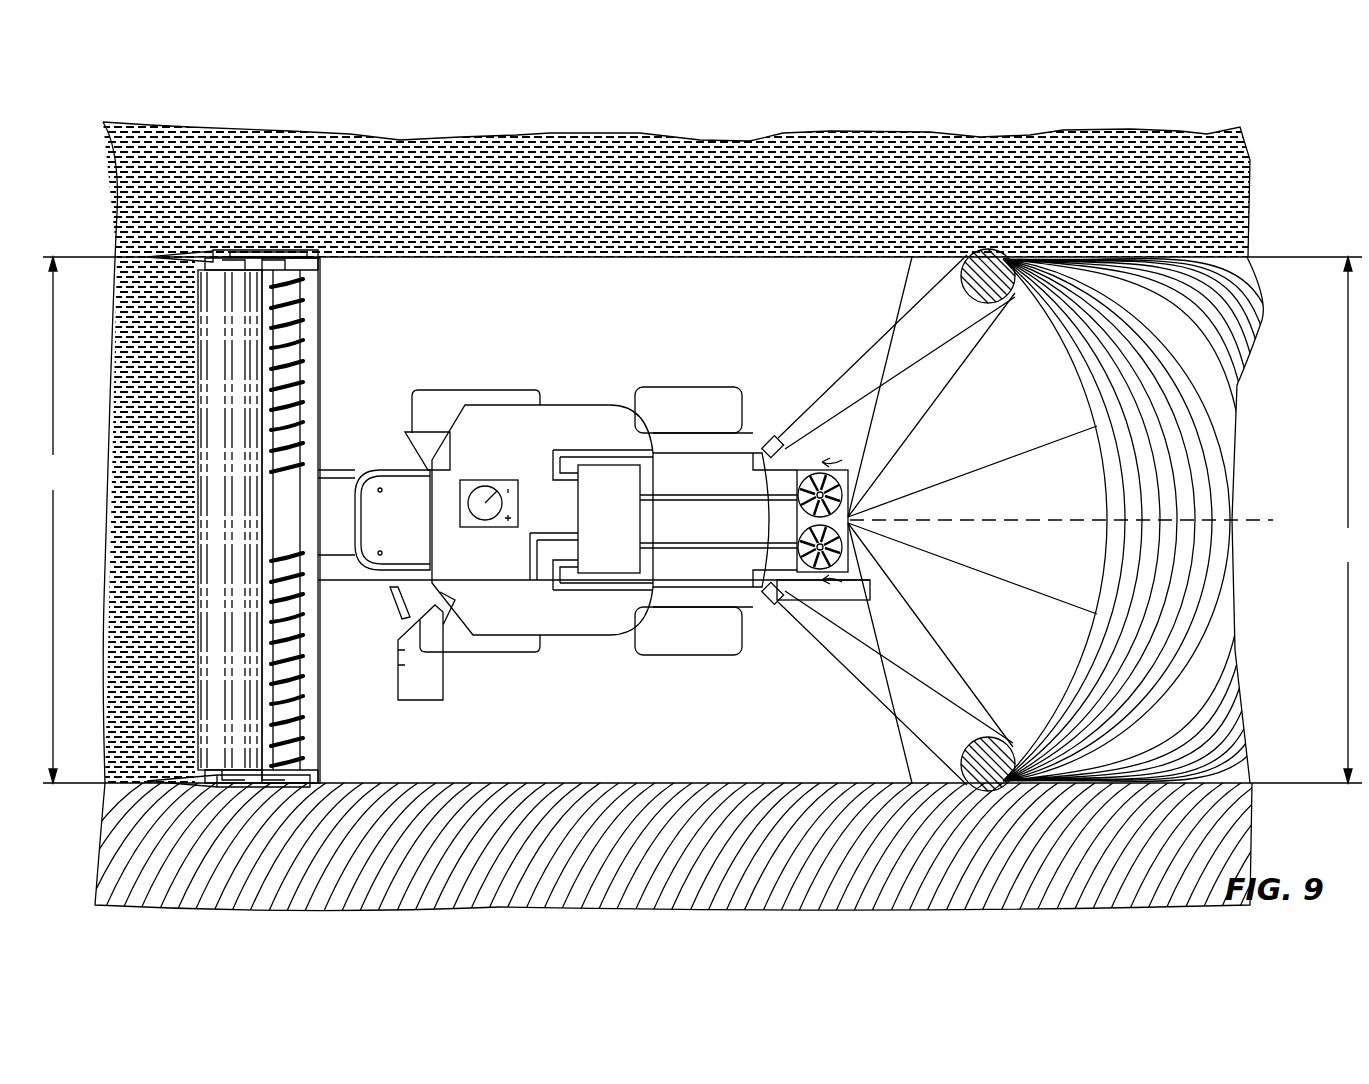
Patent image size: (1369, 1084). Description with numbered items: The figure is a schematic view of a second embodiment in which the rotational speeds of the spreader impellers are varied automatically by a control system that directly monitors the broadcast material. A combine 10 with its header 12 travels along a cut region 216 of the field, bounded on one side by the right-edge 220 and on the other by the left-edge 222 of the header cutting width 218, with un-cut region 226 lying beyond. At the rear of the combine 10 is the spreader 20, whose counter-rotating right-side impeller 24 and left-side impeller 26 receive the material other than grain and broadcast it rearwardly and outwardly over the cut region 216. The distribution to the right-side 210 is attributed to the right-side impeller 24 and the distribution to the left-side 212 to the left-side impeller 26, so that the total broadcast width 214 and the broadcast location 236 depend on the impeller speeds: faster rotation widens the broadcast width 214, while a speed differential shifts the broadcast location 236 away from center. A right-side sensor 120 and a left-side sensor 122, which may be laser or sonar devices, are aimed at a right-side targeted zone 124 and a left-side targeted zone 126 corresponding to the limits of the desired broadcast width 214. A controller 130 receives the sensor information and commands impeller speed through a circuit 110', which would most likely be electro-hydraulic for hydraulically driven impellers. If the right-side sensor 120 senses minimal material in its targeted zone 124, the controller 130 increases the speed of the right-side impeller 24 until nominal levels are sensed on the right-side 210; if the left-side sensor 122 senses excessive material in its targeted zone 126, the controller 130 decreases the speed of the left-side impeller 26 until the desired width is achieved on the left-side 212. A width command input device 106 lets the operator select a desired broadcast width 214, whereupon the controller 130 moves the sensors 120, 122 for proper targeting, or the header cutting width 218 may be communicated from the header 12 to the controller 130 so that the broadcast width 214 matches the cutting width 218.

The combine 10 is at (549, 622).
The header 12 is at (320, 723).
The spreader 20 is at (862, 530).
The right-side impeller 24 is at (784, 436).
The left-side impeller 26 is at (784, 604).
The width command input device 106 is at (487, 490).
The circuit 110' is at (716, 487).
The right-side sensor 120 is at (767, 427).
The left-side sensor 122 is at (770, 612).
The right-side targeted zone 124 is at (978, 284).
The left-side targeted zone 126 is at (978, 757).
The controller 130 is at (633, 528).
The right-side of the combine 210 is at (1227, 292).
The left-side of the combine 212 is at (1212, 733).
The broadcast width 214 is at (1349, 520).
The cut region 216 is at (620, 727).
The header cutting width 218 is at (58, 520).
The right-edge 220 is at (88, 256).
The left-edge 222 is at (85, 790).
The un-cut region 226 is at (556, 152).
The broadcast location 236 is at (1247, 522).